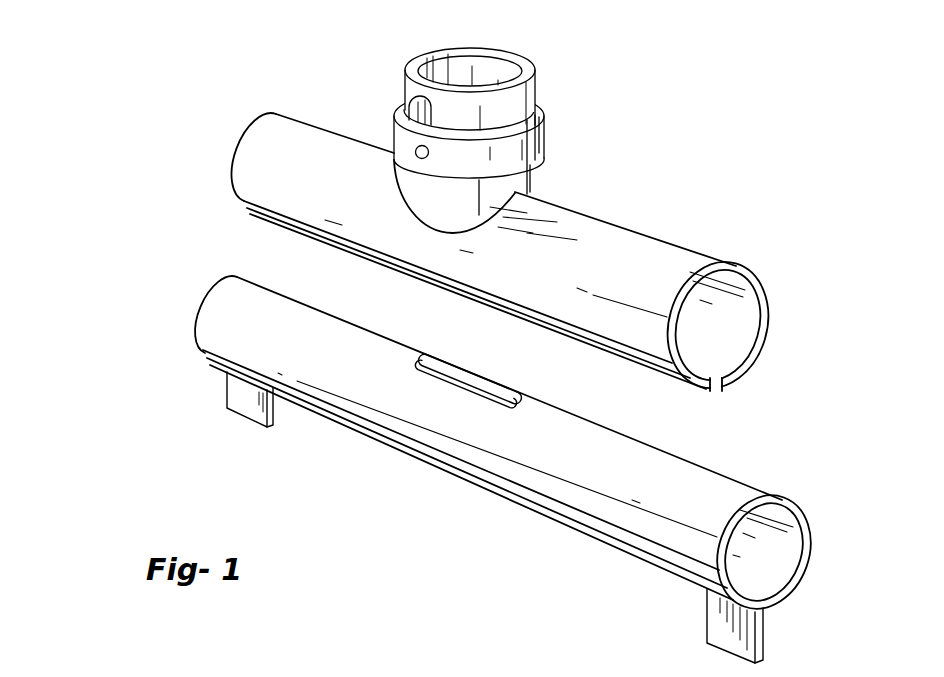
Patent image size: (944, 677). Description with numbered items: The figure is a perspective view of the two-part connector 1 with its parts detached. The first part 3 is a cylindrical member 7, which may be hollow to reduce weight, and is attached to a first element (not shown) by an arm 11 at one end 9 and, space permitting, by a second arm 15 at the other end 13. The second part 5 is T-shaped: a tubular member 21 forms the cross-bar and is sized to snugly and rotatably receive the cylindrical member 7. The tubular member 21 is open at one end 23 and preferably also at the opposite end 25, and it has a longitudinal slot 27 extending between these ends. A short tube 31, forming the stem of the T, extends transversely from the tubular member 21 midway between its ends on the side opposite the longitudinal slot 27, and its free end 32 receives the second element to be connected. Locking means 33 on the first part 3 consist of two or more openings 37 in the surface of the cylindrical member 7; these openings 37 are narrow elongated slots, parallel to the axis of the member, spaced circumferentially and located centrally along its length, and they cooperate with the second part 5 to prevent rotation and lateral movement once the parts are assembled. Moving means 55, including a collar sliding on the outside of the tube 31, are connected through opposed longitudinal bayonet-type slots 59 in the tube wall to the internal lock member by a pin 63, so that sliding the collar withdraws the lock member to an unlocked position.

The connector 1 is at (150, 128).
The first part 3 is at (530, 518).
The second part 5 is at (623, 221).
The cylindrical member 7 is at (410, 440).
The end 9 is at (802, 545).
The arm 11 is at (760, 640).
The end 13 is at (197, 327).
The arm 15 is at (240, 398).
The tubular member 21 is at (687, 247).
The end 23 is at (747, 362).
The end 25 is at (232, 182).
The longitudinal slot 27 is at (717, 397).
The tube 31 is at (520, 103).
The free end 32 is at (523, 63).
The locking means 33 is at (513, 382).
The openings 37 is at (487, 385).
The moving means 55 is at (551, 138).
The bayonet-type slots 59 is at (413, 103).
The pin 63 is at (418, 148).